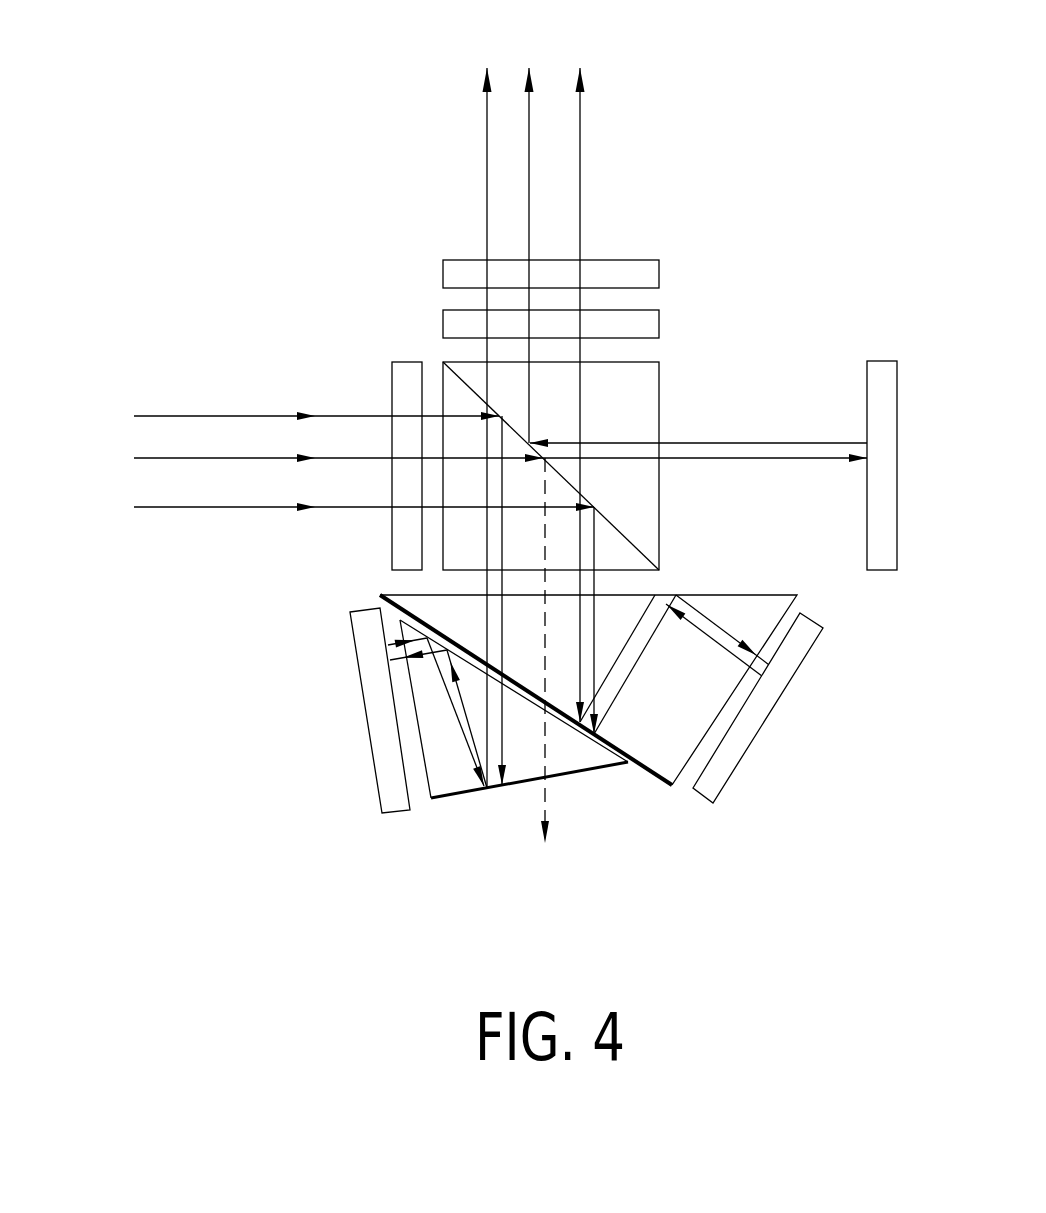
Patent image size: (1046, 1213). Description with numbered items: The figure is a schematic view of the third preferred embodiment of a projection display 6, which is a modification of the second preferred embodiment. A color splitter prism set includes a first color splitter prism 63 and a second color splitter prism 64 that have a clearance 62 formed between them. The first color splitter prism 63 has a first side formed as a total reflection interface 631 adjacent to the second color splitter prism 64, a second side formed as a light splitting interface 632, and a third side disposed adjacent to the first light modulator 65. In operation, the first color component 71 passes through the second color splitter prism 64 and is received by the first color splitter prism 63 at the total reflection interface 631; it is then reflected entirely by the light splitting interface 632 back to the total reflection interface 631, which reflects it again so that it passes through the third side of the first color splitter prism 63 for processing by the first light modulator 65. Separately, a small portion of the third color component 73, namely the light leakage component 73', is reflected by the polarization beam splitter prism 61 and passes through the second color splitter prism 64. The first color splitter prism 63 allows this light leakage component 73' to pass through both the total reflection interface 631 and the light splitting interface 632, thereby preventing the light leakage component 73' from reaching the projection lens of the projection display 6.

The projection display 6 is at (744, 168).
The polarization beam splitter prism 61 is at (620, 397).
The clearance 62 is at (595, 740).
The first color splitter prism 63 is at (435, 757).
The total reflection interface 631 is at (515, 692).
The light splitting interface 632 is at (467, 793).
The second color splitter prism 64 is at (695, 700).
The first light modulator 65 is at (380, 718).
The first color component 71 is at (487, 115).
The third color component 73 is at (465, 368).
The light leakage component 73' is at (589, 668).